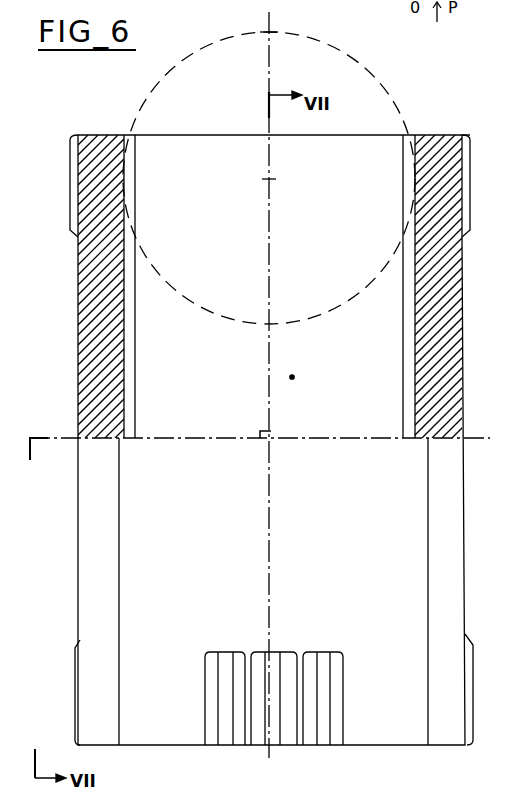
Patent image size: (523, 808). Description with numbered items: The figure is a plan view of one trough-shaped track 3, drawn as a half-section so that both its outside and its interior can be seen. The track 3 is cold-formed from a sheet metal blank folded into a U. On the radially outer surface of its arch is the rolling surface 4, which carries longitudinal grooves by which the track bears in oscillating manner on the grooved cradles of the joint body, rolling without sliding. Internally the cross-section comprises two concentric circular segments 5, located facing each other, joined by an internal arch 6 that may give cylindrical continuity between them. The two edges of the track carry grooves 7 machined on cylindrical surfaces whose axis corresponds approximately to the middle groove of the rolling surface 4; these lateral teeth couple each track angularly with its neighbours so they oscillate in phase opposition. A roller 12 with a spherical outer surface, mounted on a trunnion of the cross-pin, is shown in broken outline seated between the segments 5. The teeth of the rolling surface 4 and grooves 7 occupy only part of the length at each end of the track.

The trough-shaped track 3 is at (96, 347).
The rolling surface 4 is at (205, 705).
The concentric circular segments 5 is at (135, 388).
The internal arch 6 is at (299, 374).
The grooves 7 is at (70, 180).
The roller 12 is at (400, 100).